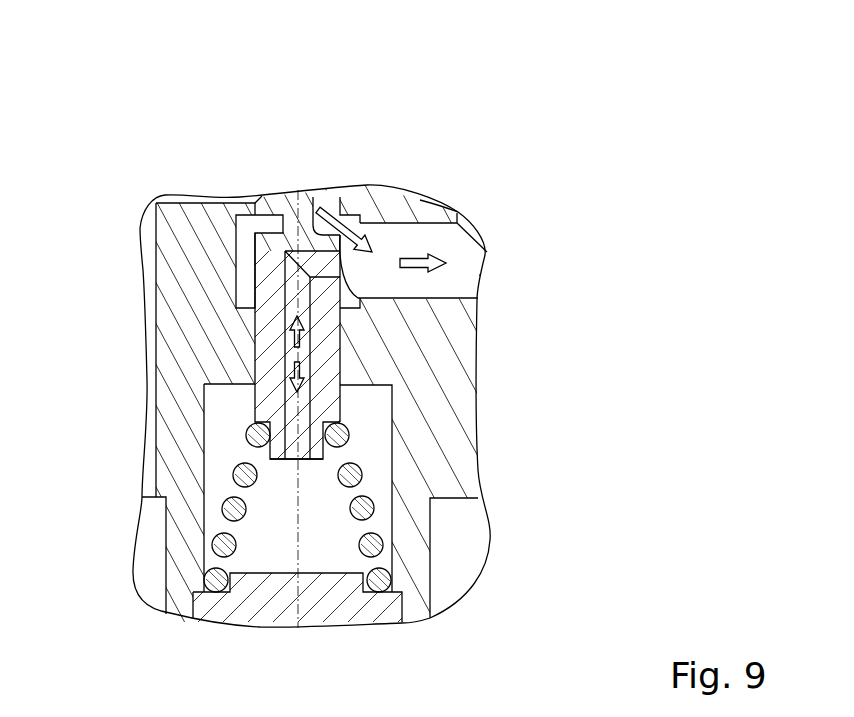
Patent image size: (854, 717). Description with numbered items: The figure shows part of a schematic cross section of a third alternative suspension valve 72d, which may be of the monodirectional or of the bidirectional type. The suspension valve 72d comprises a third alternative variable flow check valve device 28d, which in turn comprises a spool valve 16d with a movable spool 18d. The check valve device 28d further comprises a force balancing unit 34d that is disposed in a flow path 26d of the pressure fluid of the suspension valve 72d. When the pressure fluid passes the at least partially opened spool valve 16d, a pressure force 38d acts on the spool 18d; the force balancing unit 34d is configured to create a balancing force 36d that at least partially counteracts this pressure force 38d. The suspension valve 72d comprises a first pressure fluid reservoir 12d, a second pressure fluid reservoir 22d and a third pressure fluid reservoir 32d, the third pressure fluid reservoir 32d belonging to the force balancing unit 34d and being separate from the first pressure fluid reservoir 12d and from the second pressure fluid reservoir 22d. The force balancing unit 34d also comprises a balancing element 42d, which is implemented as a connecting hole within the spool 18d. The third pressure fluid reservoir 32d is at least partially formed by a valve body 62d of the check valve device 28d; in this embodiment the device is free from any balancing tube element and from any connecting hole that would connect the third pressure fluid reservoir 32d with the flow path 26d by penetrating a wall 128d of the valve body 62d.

The first pressure fluid reservoir 12d is at (150, 593).
The second pressure fluid reservoir 22d is at (503, 132).
The movable spool 18d is at (270, 262).
The spool valve 16d is at (256, 327).
The flow path 26d is at (352, 222).
The third alternative suspension valve 72d is at (418, 182).
The third alternative variable flow check valve device 28d is at (450, 197).
The wall 128d is at (353, 350).
The valve body 62d is at (420, 460).
The pressure force 38d is at (293, 340).
The balancing force 36d is at (293, 377).
The balancing element 42d is at (293, 393).
The force balancing unit 34d is at (288, 410).
The third pressure fluid reservoir 32d is at (268, 540).